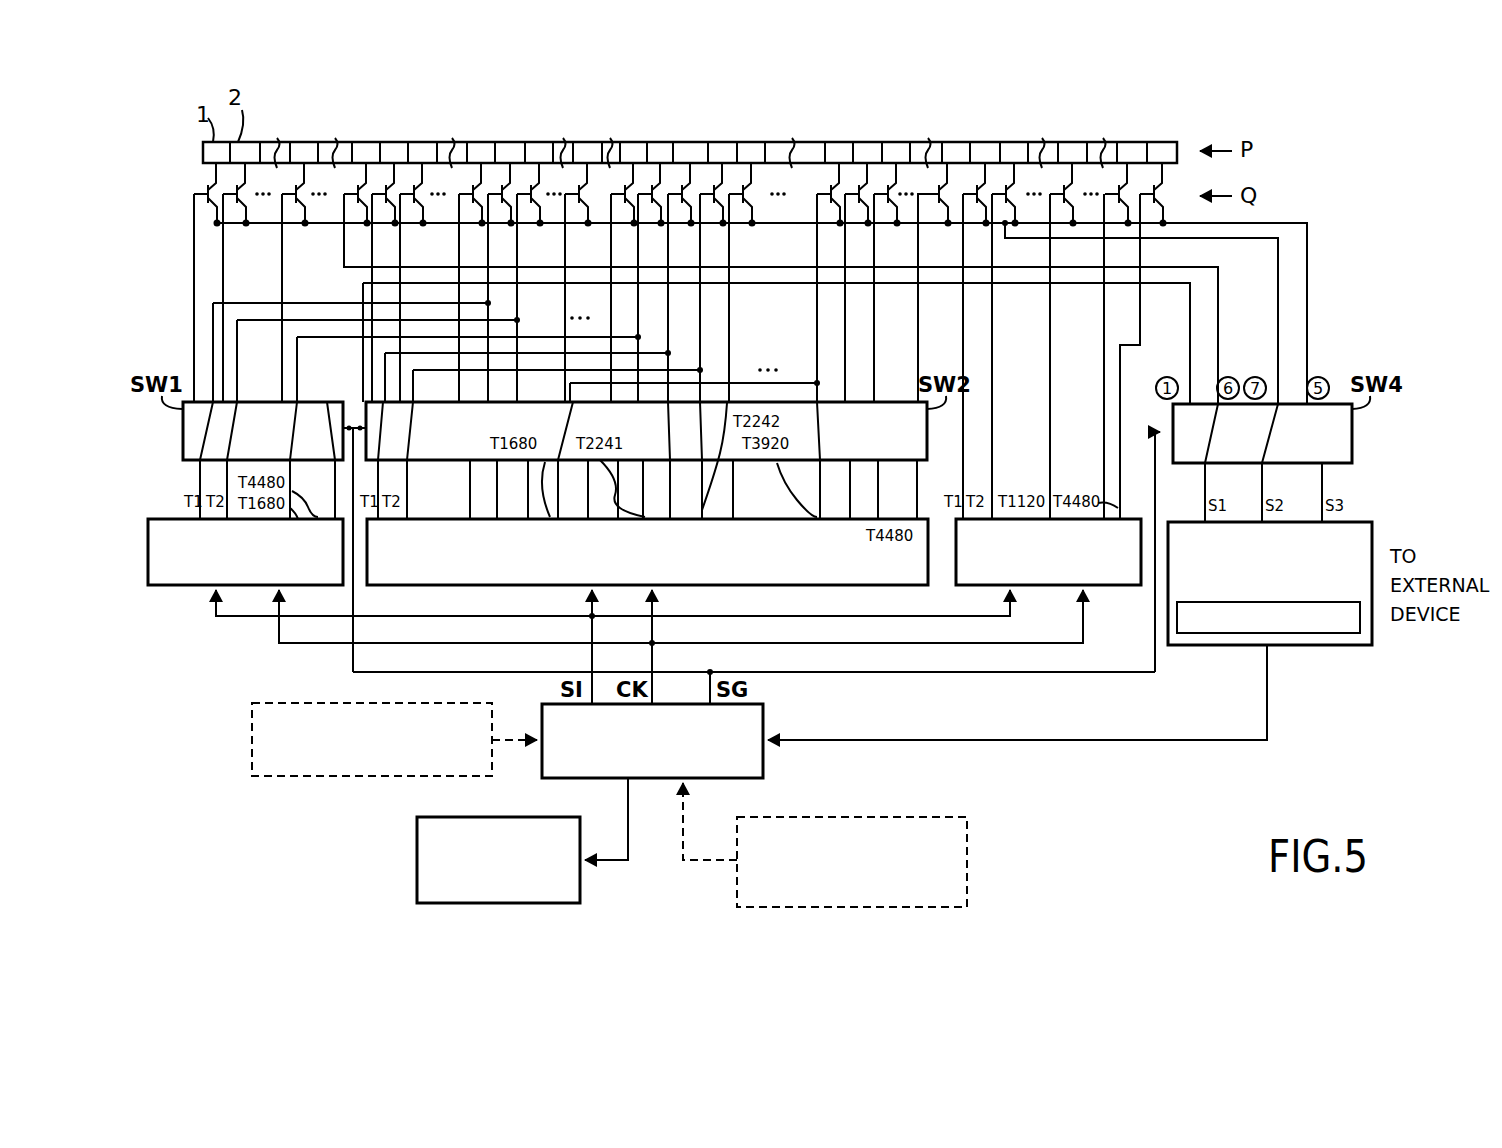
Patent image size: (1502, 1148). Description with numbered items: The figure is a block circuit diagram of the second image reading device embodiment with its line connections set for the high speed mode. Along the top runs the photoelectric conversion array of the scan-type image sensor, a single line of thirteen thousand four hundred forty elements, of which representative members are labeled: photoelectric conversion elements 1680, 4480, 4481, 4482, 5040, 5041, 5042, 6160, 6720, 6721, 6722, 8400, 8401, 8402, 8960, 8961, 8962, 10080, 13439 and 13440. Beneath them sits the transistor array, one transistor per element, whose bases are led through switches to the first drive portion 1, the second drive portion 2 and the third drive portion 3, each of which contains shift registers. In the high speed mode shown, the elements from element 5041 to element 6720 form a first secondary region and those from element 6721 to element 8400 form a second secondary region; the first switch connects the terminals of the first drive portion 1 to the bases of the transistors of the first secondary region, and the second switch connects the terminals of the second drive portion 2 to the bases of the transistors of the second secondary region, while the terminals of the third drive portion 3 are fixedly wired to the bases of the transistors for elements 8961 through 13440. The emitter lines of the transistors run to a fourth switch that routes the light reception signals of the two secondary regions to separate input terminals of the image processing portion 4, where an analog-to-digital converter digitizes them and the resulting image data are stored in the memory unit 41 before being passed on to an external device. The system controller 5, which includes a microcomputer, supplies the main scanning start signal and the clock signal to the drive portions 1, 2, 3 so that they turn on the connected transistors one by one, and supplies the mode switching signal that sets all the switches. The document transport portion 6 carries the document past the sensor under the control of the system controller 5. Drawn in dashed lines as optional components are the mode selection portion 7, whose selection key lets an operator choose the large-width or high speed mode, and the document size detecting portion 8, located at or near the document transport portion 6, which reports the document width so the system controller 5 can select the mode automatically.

The first drive portion 1 is at (176, 587).
The second drive portion 2 is at (905, 587).
The third drive portion 3 is at (1093, 587).
The image processing portion 4 is at (1290, 590).
The memory unit 41 is at (1297, 634).
The system controller 5 is at (763, 752).
The document transport portion 6 is at (417, 868).
The mode selection portion 7 is at (250, 745).
The document size detecting portion 8 is at (967, 880).
The photoelectric conversion element 1680 is at (310, 140).
The photoelectric conversion element 4480 is at (360, 142).
The photoelectric conversion element 4481 is at (392, 142).
The photoelectric conversion element 4482 is at (418, 142).
The photoelectric conversion element 5040 is at (480, 142).
The photoelectric conversion element 5041 is at (502, 142).
The photoelectric conversion element 5042 is at (542, 142).
The photoelectric conversion element 6160 is at (583, 142).
The photoelectric conversion element 6720 is at (660, 142).
The photoelectric conversion element 6721 is at (706, 128).
The photoelectric conversion element 6722 is at (723, 142).
The photoelectric conversion element 8400 is at (835, 142).
The photoelectric conversion element 8401 is at (865, 142).
The photoelectric conversion element 8402 is at (897, 142).
The photoelectric conversion element 8960 is at (947, 142).
The photoelectric conversion element 8961 is at (980, 142).
The photoelectric conversion element 8962 is at (1013, 142).
The photoelectric conversion element 10080 is at (1073, 142).
The photoelectric conversion element 13439 is at (1123, 142).
The photoelectric conversion element 13440 is at (1175, 142).